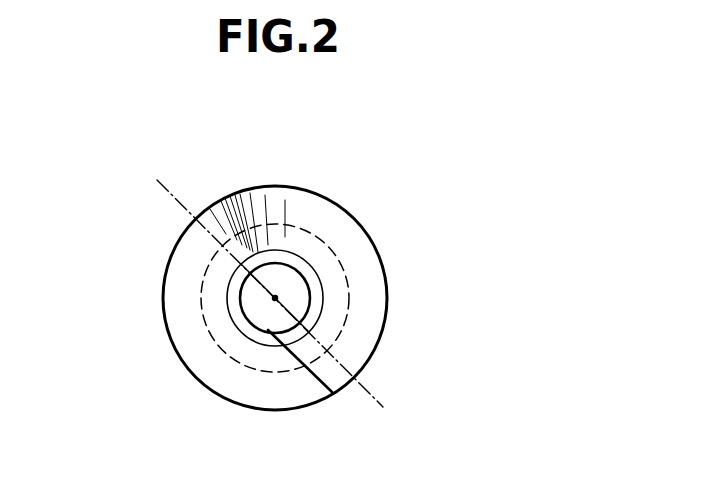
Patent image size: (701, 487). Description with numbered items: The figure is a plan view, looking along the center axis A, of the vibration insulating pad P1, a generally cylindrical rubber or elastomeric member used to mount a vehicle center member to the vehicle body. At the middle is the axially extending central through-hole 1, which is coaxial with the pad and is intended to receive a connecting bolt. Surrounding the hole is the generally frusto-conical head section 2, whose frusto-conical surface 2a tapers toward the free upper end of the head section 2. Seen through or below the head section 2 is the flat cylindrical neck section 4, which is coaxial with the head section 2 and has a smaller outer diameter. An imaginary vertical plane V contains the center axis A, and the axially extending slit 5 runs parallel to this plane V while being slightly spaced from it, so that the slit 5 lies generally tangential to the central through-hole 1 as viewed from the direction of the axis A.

The axially extending central through-hole 1 is at (245, 298).
The head section 2 is at (372, 245).
The frusto-conical surface 2a is at (372, 323).
The neck section 4 is at (348, 292).
The slit 5 is at (318, 378).
The center axis A is at (275, 298).
The imaginary vertical plane V is at (172, 186).
The vibration insulating pad P1 is at (374, 220).